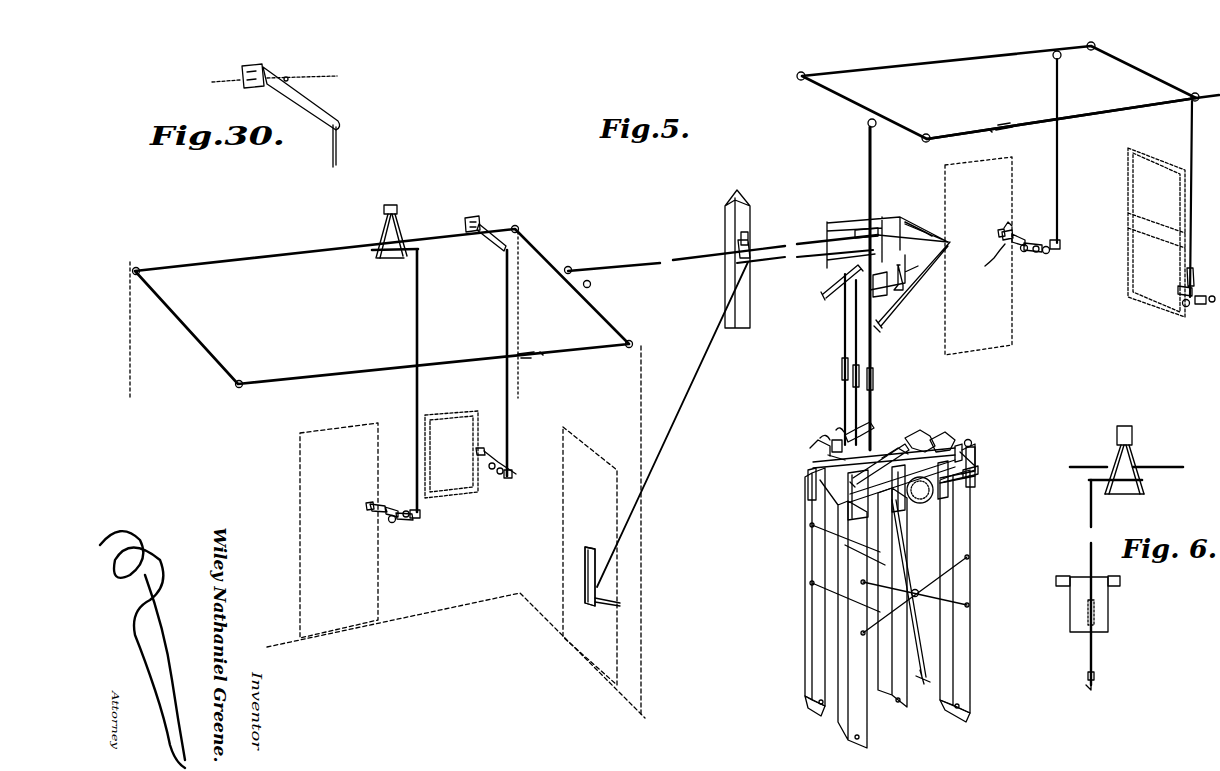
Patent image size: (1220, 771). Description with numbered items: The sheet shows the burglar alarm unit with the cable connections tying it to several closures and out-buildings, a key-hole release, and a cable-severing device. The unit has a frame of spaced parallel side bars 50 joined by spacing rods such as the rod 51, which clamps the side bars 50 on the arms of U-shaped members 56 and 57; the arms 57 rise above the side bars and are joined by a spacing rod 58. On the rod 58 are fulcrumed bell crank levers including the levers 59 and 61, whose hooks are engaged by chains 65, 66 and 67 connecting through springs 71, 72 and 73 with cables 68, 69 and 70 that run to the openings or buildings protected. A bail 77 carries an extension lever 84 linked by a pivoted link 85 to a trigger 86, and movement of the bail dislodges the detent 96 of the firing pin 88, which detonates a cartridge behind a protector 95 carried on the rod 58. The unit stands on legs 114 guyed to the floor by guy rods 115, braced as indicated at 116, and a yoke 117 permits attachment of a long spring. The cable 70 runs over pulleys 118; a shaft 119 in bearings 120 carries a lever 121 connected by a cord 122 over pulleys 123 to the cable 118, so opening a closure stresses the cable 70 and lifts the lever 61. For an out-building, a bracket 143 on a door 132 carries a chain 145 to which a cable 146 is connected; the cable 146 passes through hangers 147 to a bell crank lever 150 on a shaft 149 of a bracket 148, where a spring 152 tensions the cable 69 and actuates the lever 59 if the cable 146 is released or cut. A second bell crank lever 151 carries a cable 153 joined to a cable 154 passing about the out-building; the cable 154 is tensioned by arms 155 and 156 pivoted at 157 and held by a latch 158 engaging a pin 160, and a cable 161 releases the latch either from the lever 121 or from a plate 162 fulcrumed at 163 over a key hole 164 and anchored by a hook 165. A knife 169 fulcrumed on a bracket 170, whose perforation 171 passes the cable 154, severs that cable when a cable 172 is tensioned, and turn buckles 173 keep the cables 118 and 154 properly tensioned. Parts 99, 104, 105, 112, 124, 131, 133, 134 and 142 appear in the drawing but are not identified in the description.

In FIG. 5, the side bars 50 is at (974, 442).
In FIG. 5, the spacing rod 51 is at (815, 463).
In FIG. 5, the U-shaped member 56 is at (838, 501).
In FIG. 5, the U-shaped member arms 57 is at (972, 483).
In FIG. 5, the spacing rod 58 is at (945, 430).
In FIG. 5, the bell crank lever 59 is at (841, 436).
In FIG. 5, the bell crank lever 61 is at (895, 471).
In FIG. 5, the chain 65 is at (843, 388).
In FIG. 5, the chain 66 is at (864, 400).
In FIG. 5, the chain 67 is at (872, 399).
In FIG. 5, the cable 68 is at (843, 333).
In FIG. 5, the cable 69 is at (859, 340).
In FIG. 5, the cable 70 is at (875, 356).
In FIG. 5, the spring 71 is at (841, 364).
In FIG. 5, the spring 72 is at (852, 372).
In FIG. 5, the spring 73 is at (874, 376).
In FIG. 5, the bail 77 is at (960, 440).
In FIG. 5, the extension lever 84 is at (927, 503).
In FIG. 5, the pivoted link 85 is at (962, 491).
In FIG. 5, the trigger 86 is at (979, 473).
In FIG. 5, the firing pin 88 is at (972, 443).
In FIG. 5, the protector 95 is at (928, 425).
In FIG. 5, the detent 96 is at (976, 457).
In FIG. 5, the post 99 is at (897, 445).
In FIG. 5, the cross brace 104 is at (969, 557).
In FIG. 5, the slanted leg 105 is at (912, 651).
In FIG. 5, the crank 112 is at (862, 430).
In FIG. 5, the legs 114 is at (804, 647).
In FIG. 5, the guy rods 115 is at (810, 683).
In FIG. 5, the bracing 116 is at (1115, 116).
In FIG. 5, the yoke 117 is at (903, 707).
In FIG. 5, the pulleys 118 is at (804, 78).
In FIG. 5, the shaft 119 is at (400, 511).
In FIG. 5, the bearings 120 is at (1049, 252).
In FIG. 5, the lever 121 is at (420, 518).
In FIG. 5, the cord or cable 122 is at (1059, 167).
In FIG. 5, the pulleys 123 is at (1060, 62).
In FIG. 5, the window frame guide 124 is at (1180, 285).
In FIG. 5, the clip 131 is at (370, 503).
In FIG. 5, the door 132 is at (380, 561).
In FIG. 5, the hook 133 is at (492, 460).
In FIG. 5, the slide fitting 134 is at (370, 521).
In FIG. 5, the arm 142 is at (622, 603).
In FIG. 5, the bracket 143 is at (585, 575).
In FIG. 5, the chain 145 is at (596, 548).
In FIG. 5, the cable 146 is at (660, 466).
In FIG. 5, the hangers and supporters 147 is at (752, 240).
In FIG. 5, the bracket 148 is at (843, 220).
In FIG. 5, the shaft 149 is at (908, 283).
In FIG. 5, the bell crank lever 150 is at (896, 288).
In FIG. 5, the bell crank lever 151 is at (835, 273).
In FIG. 5, the spring 152 is at (908, 222).
In FIG. 5, the cable 153 is at (775, 250).
In FIG. 5, the cable 154 is at (570, 353).
In FIG. 6, the cable 154 is at (1075, 470).
In FIG. 5, the arm 155 is at (402, 236).
In FIG. 6, the arm 155 is at (1138, 461).
In FIG. 5, the arm 156 is at (380, 233).
In FIG. 6, the arm 156 is at (1116, 455).
In FIG. 5, the pivot 157 is at (396, 205).
In FIG. 6, the pivot 157 is at (1125, 427).
In FIG. 5, the latch 158 is at (387, 262).
In FIG. 6, the latch 158 is at (1125, 491).
In FIG. 5, the pin 160 is at (412, 249).
In FIG. 6, the pin 160 is at (1108, 478).
In FIG. 5, the cable 161 is at (419, 390).
In FIG. 6, the cable 161 is at (1093, 519).
In FIG. 6, the plate 162 is at (1110, 607).
In FIG. 6, the fulcrum 163 is at (1114, 575).
In FIG. 6, the key hole 164 is at (1096, 617).
In FIG. 6, the hook 165 is at (1095, 685).
In FIG. 30, the knife 169 is at (304, 98).
In FIG. 5, the knife 169 is at (482, 240).
In FIG. 30, the bracket 170 is at (264, 70).
In FIG. 5, the bracket 170 is at (481, 226).
In FIG. 30, the perforation 171 is at (278, 82).
In FIG. 30, the cable 172 is at (338, 144).
In FIG. 5, the cable 172 is at (505, 318).
In FIG. 5, the turn buckles 173 is at (536, 360).